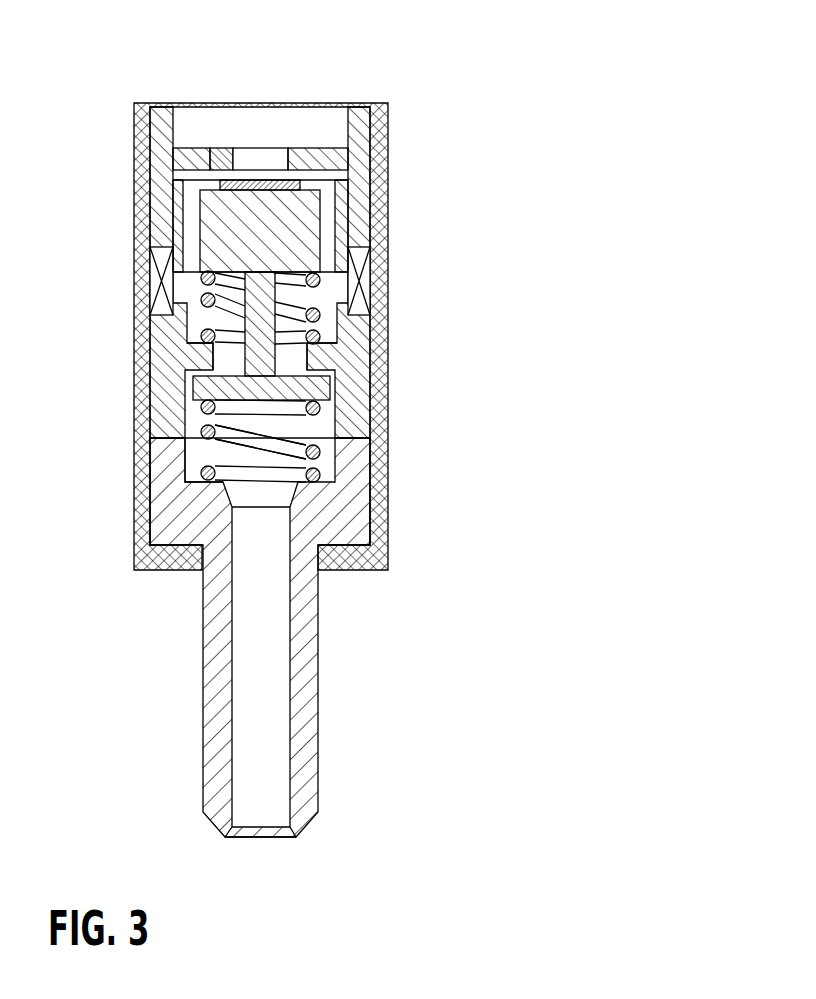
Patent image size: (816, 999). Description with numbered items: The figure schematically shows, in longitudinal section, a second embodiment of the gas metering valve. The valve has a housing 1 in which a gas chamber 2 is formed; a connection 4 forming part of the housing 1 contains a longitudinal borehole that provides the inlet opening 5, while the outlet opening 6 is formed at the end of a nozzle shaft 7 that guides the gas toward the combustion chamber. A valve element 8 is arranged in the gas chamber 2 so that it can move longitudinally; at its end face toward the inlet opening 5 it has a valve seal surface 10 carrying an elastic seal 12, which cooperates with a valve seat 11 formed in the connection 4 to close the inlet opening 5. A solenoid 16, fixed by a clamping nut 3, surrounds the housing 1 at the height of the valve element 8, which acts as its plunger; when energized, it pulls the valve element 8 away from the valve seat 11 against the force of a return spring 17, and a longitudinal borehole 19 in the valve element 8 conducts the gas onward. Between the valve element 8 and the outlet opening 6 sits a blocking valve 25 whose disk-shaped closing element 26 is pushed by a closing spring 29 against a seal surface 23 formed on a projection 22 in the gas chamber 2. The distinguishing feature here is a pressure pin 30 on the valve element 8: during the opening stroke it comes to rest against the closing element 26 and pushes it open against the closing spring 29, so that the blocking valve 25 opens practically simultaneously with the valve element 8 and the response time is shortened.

The housing 1 is at (121, 152).
The gas chamber 2 is at (322, 326).
The clamping nut 3 is at (388, 147).
The connection 4 is at (360, 120).
The inlet opening 5 is at (247, 162).
The outlet opening 6 is at (260, 838).
The nozzle shaft 7 is at (217, 712).
The valve element 8 is at (287, 223).
The valve seal surface 10 is at (291, 160).
The valve seat 11 is at (207, 148).
The elastic seal 12 is at (273, 183).
The solenoid 16 is at (153, 283).
The return spring 17 is at (203, 336).
The longitudinal borehole 19 is at (193, 210).
The projection 22 is at (210, 355).
The seal surface 23 is at (195, 393).
The blocking valve 25 is at (350, 386).
The closing element 26 is at (288, 390).
The closing spring 29 is at (322, 452).
The pressure pin 30 is at (280, 354).